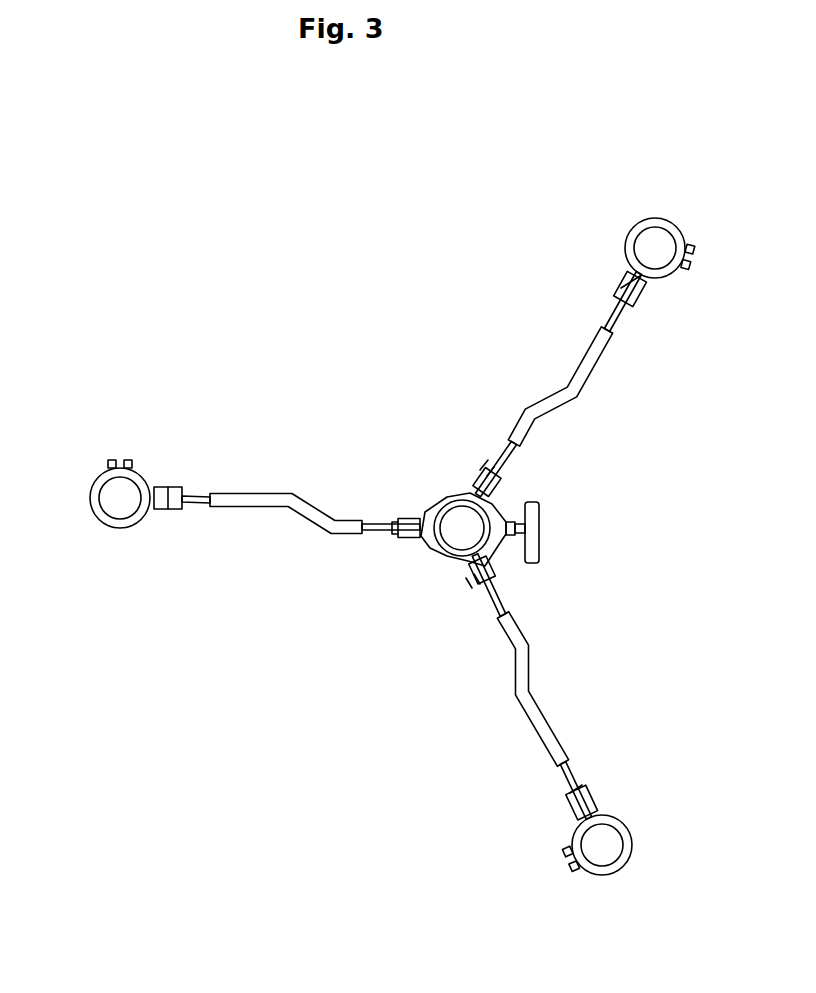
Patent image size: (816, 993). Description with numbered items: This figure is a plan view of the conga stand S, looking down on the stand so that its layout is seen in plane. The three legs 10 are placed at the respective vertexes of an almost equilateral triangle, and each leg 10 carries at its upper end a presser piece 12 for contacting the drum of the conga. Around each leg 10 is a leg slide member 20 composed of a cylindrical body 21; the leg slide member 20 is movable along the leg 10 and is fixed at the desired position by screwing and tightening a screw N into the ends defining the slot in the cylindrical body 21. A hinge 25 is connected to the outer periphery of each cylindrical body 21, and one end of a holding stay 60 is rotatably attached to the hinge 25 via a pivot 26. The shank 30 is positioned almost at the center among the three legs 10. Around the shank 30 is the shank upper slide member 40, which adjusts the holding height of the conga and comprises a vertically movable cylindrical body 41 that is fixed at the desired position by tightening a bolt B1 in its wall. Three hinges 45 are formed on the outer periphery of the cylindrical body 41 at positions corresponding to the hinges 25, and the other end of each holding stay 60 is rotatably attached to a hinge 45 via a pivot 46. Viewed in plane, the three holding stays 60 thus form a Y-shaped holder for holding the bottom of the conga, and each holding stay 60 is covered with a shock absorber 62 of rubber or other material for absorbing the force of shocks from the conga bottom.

The leg 10 is at (630, 224).
The presser piece 12 is at (655, 248).
The leg slide member 20 is at (628, 234).
The cylindrical body 21 is at (136, 464).
The hinge 25 is at (655, 290).
The pivot 26 is at (622, 284).
The shank 30 is at (457, 560).
The shank upper slide member 40 is at (455, 490).
The cylindrical body 41 is at (443, 503).
The hinge 45 is at (503, 477).
The pivot 46 is at (478, 482).
The holding stay 60 is at (580, 393).
The shock absorber 62 is at (587, 363).
The screw N is at (690, 254).
The conga stand S is at (300, 383).
The bolt B1 is at (532, 528).